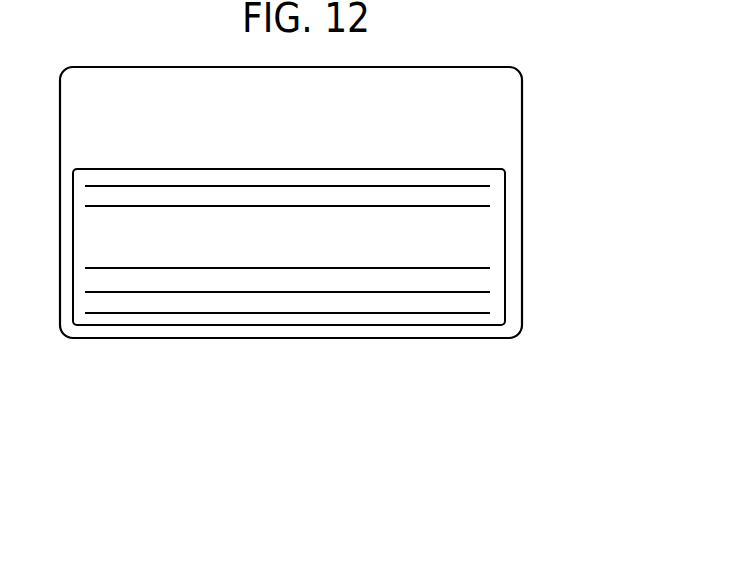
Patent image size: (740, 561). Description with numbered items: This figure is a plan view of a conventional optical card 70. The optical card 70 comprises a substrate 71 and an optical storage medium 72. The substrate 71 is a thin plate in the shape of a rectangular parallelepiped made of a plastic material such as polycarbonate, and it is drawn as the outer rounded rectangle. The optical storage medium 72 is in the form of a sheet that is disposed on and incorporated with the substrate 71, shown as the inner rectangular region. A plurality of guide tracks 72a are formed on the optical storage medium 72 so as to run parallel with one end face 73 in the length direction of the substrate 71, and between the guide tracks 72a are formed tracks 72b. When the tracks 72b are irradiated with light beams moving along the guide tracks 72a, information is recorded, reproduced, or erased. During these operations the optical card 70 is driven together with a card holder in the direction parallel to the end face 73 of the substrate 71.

The optical card 70 is at (538, 107).
The substrate 71 is at (507, 90).
The optical storage medium 72 is at (485, 168).
The guide tracks 72a is at (480, 186).
The tracks 72b is at (480, 277).
The end face 73 is at (432, 67).